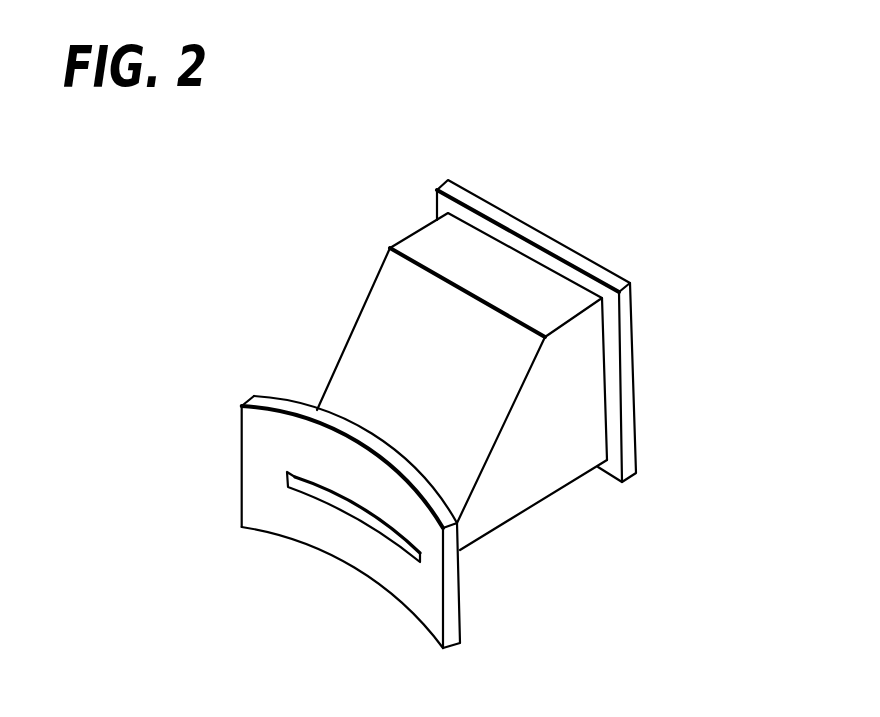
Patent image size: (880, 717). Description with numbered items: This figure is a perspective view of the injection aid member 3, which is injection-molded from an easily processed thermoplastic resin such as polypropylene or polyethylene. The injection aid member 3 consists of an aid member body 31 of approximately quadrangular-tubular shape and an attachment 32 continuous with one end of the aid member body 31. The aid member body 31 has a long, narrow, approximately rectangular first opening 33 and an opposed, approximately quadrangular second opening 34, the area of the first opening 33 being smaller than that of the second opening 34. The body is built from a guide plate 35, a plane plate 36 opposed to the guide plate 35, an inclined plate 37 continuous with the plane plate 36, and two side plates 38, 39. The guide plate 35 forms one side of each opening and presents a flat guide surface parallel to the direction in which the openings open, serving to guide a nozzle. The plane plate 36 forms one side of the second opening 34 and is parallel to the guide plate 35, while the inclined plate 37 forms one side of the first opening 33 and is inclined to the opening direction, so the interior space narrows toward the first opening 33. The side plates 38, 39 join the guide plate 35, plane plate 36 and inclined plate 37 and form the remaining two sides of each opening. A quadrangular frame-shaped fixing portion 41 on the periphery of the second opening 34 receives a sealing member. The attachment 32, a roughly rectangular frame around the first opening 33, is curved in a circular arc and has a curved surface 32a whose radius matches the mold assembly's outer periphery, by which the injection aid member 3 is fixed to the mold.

The injection aid member 3 is at (578, 179).
The aid member body 31 is at (552, 521).
The attachment 32 is at (287, 408).
The curved surface 32a is at (260, 480).
The first opening 33 is at (347, 503).
The second opening 34 is at (642, 364).
The guide plate 35 is at (522, 513).
The plane plate 36 is at (440, 240).
The inclined plate 37 is at (392, 318).
The side plate 38 is at (567, 460).
The side plate 39 is at (343, 348).
The fixing portion 41 is at (517, 225).